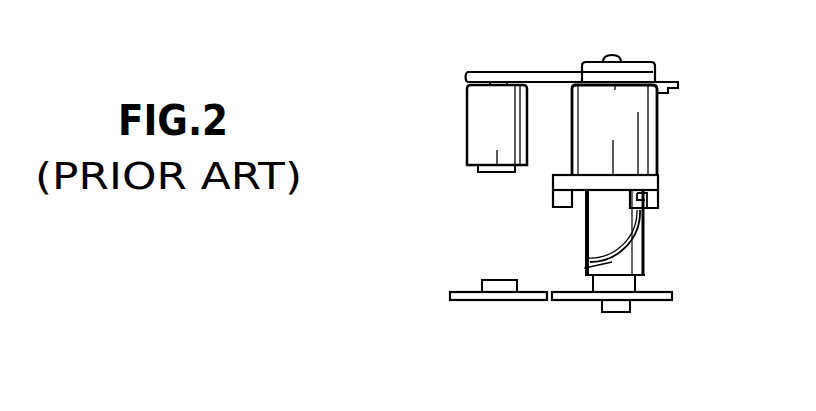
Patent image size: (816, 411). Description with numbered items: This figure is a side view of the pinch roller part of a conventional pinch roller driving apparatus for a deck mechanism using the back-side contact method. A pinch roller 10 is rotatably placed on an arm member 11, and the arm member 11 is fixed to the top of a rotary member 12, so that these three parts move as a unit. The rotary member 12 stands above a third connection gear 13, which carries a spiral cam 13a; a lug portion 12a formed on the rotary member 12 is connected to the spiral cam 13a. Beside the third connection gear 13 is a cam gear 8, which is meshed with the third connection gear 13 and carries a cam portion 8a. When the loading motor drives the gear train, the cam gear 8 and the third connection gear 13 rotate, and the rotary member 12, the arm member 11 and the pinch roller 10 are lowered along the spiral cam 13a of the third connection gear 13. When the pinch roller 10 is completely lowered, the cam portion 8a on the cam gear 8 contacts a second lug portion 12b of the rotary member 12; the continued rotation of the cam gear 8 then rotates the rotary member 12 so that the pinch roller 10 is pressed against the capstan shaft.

The cam gear 8 is at (464, 300).
The cam portion 8a is at (490, 278).
The pinch roller 10 is at (468, 125).
The arm member 11 is at (538, 70).
The rotary member 12 is at (658, 135).
The lug portion 12a is at (646, 208).
The lug portion 12b is at (553, 200).
The third connection gear 13 is at (673, 296).
The spiral cam 13a is at (614, 262).